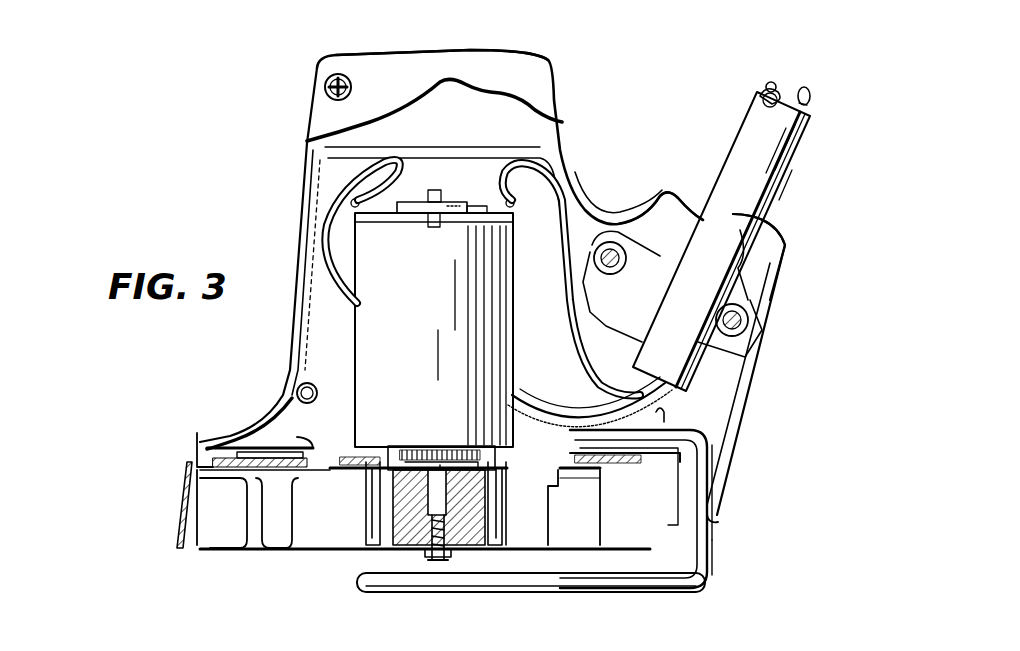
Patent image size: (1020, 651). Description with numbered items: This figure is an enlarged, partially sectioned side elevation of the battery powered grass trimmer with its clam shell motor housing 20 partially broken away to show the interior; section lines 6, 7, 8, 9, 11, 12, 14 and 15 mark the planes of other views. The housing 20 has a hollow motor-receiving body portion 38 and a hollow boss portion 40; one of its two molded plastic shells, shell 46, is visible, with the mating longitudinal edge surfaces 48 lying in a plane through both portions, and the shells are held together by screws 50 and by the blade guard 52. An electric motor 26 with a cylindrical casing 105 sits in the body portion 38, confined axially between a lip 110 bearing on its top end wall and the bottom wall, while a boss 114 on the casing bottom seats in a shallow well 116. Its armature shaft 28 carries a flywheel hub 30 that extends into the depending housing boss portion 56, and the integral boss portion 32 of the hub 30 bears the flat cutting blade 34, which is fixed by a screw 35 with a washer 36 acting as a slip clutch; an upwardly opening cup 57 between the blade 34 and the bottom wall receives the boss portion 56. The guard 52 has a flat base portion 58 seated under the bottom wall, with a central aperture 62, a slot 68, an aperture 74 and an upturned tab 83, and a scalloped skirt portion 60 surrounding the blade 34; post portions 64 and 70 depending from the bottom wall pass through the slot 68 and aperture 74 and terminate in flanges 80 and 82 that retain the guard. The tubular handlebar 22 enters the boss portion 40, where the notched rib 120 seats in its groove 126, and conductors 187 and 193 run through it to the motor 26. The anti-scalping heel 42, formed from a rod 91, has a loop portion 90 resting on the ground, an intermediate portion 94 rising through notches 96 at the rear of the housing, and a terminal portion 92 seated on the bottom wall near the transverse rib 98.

The motor housing 20 is at (560, 55).
The motor-receiving body portion 38 is at (465, 52).
The housing shell 46 is at (372, 86).
The screw 50 is at (325, 85).
The longitudinal edge surfaces 48 is at (300, 203).
The cylindrical casing 105 is at (403, 311).
The lip 110 is at (465, 203).
The electric motor 26 is at (516, 240).
The notched-out rib 120 is at (660, 214).
The groove 126 is at (690, 282).
The handlebar 22 is at (800, 145).
The conductor 187 is at (770, 82).
The conductor 193 is at (812, 94).
The boss portion 40 is at (784, 257).
The post portion 70 is at (565, 432).
The terminal portion 92 is at (583, 440).
The transverse rib 98 is at (660, 421).
The base portion 58 is at (273, 448).
The tab 83 is at (222, 445).
The slot 68 is at (292, 438).
The post portion 64 is at (290, 467).
The blade guard 52 is at (186, 508).
The skirt portion 60 is at (243, 525).
The flanges 80 is at (286, 490).
The cutting blade 34 is at (345, 552).
The armature shaft 28 is at (432, 489).
The well 116 is at (395, 466).
The boss 114 is at (480, 447).
The central aperture 62 is at (368, 462).
The cup 57 is at (372, 530).
The boss portion 56 is at (380, 488).
The flywheel hub 30 is at (470, 520).
The boss portion 32 is at (452, 553).
The washer 36 is at (432, 560).
The screw 35 is at (438, 562).
The flanges 82 is at (575, 470).
The aperture 74 is at (595, 465).
The loop portion 90 is at (528, 592).
The anti-scalping heel 42 is at (652, 592).
The rod 91 is at (708, 566).
The intermediate portion 94 is at (712, 494).
The notches 96 is at (720, 523).
The section line 14- 14 is at (412, 170).
The section line 15- 15 is at (718, 184).
The section line 11- 11 is at (704, 420).
The section line 7- 7 is at (300, 423).
The section line 8- 8 is at (560, 425).
The section line 12- 12 is at (550, 530).
The section line 6- 6 is at (185, 465).
The section line 9- 9 is at (150, 590).